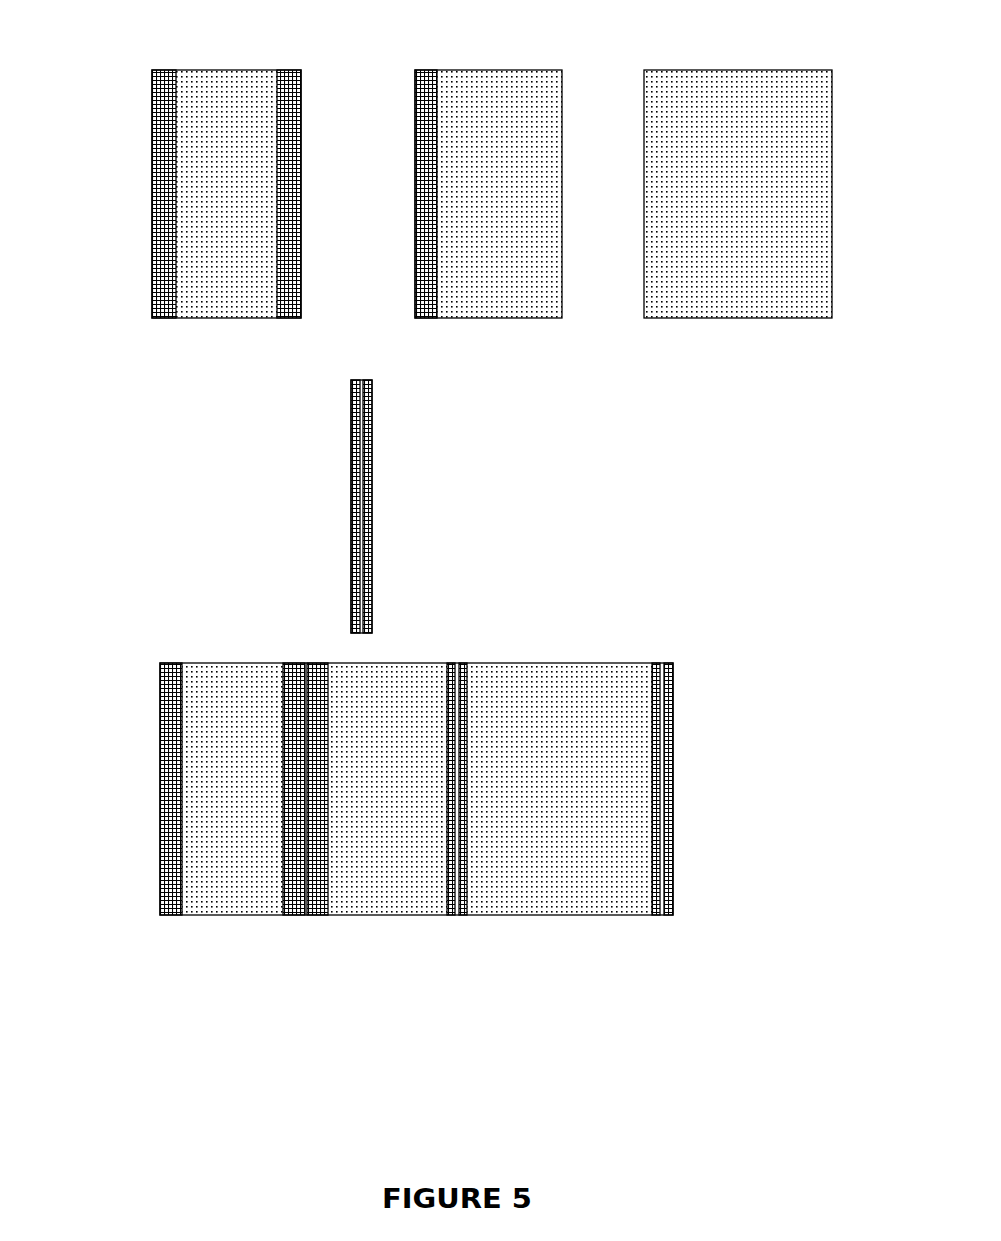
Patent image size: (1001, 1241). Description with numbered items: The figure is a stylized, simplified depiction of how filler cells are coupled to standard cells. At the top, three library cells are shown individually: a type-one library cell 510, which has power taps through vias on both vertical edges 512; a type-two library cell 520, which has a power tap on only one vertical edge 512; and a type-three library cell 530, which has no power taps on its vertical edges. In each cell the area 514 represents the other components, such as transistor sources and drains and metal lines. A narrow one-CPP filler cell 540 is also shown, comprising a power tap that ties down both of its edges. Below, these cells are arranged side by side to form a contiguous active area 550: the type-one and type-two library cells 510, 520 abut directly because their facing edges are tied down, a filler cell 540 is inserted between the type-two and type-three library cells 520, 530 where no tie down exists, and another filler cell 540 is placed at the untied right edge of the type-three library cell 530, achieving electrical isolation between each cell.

The type-1 library cell 510 is at (232, 50).
The type-2 library cell 520 is at (488, 55).
The type-3 library cell 530 is at (752, 55).
The 1st filler cell 540 is at (350, 537).
The contiguous active area 550 is at (537, 618).
The vertical edge with power tap 512 is at (152, 228).
The area of other cell components 514 is at (215, 283).